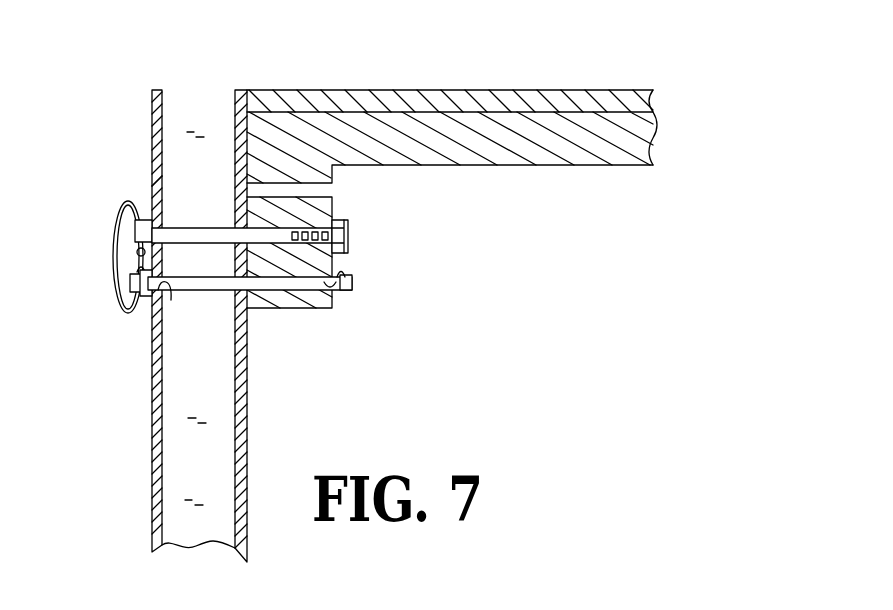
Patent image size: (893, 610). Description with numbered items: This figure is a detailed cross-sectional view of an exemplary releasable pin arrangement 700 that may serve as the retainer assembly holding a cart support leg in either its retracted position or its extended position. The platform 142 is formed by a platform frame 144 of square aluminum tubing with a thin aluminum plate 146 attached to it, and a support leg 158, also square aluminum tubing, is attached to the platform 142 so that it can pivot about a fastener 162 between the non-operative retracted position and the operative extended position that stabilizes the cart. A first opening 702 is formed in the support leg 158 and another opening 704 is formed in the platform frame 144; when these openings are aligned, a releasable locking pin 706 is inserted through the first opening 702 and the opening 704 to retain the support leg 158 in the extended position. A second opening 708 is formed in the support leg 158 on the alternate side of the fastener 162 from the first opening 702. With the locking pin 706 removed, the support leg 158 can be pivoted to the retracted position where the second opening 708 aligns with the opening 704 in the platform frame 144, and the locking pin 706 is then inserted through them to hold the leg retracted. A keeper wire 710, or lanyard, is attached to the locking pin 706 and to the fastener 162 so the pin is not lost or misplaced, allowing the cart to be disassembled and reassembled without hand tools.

The releasable pin arrangement 700 is at (406, 289).
The platform 142 is at (667, 130).
The plate 146 is at (533, 63).
The platform frame 144 is at (295, 308).
The support leg 158 is at (152, 410).
The fastener 162 is at (348, 233).
The first opening 702 is at (171, 300).
The opening 704 is at (340, 292).
The releasable locking pin 706 is at (352, 288).
The second opening 708 is at (152, 190).
The keeper wire 710 is at (117, 276).